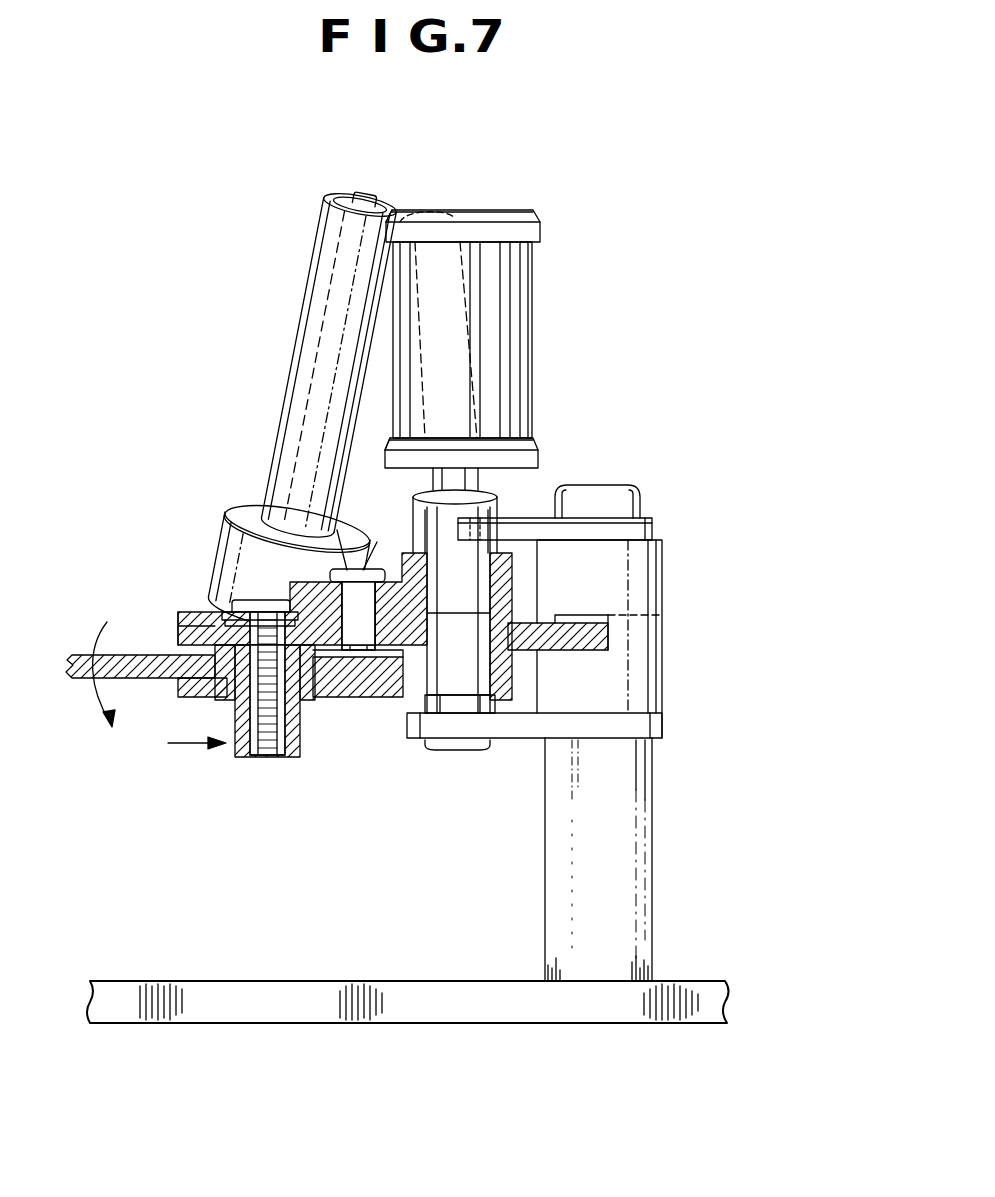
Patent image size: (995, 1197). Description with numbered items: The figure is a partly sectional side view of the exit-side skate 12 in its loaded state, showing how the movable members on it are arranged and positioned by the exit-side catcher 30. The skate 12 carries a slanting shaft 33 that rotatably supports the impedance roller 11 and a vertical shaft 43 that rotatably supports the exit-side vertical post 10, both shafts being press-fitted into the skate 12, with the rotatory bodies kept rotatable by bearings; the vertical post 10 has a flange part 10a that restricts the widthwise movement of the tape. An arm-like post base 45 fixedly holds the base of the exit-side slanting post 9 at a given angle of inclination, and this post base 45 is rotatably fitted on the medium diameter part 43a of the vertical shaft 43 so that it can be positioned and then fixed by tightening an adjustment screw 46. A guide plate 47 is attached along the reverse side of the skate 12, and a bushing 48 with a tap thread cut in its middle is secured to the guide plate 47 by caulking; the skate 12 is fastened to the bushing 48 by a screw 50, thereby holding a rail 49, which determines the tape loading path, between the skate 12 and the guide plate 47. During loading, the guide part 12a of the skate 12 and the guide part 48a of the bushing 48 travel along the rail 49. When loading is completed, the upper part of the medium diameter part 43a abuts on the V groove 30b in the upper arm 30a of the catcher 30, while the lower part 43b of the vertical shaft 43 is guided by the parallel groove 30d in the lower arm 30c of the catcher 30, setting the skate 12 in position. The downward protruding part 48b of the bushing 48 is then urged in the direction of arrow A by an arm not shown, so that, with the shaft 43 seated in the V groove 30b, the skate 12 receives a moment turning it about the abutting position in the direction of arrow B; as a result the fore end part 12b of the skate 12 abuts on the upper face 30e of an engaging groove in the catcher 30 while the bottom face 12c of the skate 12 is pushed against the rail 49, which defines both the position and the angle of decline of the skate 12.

The exit-side slanting post 9 is at (415, 218).
The exit-side vertical post 10 is at (495, 275).
The flange part 10a is at (483, 213).
The impedance roller 11 is at (325, 290).
The exit-side skate 12 is at (200, 617).
The guide part 12a is at (500, 718).
The fore end part 12b is at (578, 618).
The bottom face 12c is at (152, 657).
The exit-side catcher 30 is at (638, 685).
The upper arm 30a is at (542, 525).
The V groove 30b is at (510, 505).
The lower arm 30c is at (612, 746).
The parallel groove 30d is at (465, 727).
The upper face 30e is at (632, 615).
The slanting shaft 33 is at (366, 195).
The vertical shaft 43 is at (375, 695).
The medium diameter part 43a is at (420, 528).
The lower part 43b is at (445, 752).
The post base 45 is at (514, 567).
The adjustment screw 46 is at (330, 535).
The guide plate 47 is at (217, 667).
The bushing 48 is at (302, 700).
The guide part 48a is at (180, 688).
The downward protruding part 48b is at (243, 725).
The rail 49 is at (80, 660).
The screw 50 is at (262, 592).
The arrow A is at (183, 745).
The arrow B is at (95, 712).